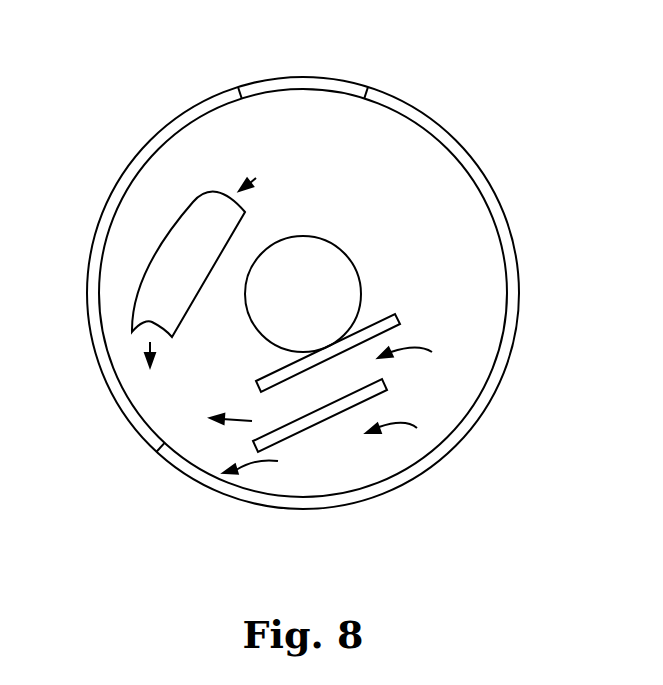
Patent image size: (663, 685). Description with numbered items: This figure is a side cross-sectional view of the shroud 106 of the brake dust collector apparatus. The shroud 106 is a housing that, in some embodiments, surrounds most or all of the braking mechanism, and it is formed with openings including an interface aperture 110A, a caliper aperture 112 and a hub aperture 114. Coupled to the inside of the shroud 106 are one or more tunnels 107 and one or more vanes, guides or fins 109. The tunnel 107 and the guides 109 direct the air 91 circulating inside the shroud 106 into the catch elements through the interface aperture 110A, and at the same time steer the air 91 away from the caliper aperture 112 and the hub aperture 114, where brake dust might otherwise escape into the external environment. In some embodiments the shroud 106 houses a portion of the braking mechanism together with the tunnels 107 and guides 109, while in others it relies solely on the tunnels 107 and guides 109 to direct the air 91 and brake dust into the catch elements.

The air 91 is at (256, 178).
The shroud 106 is at (467, 158).
The tunnel 107 is at (173, 258).
The guide 109 is at (400, 318).
The interface aperture 110A is at (120, 402).
The caliper aperture 112 is at (237, 68).
The hub aperture 114 is at (320, 253).